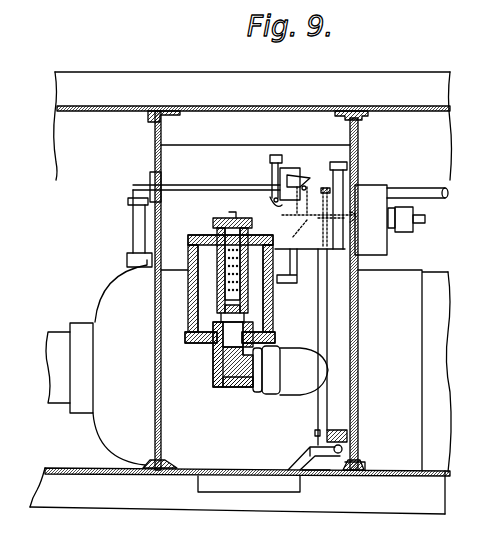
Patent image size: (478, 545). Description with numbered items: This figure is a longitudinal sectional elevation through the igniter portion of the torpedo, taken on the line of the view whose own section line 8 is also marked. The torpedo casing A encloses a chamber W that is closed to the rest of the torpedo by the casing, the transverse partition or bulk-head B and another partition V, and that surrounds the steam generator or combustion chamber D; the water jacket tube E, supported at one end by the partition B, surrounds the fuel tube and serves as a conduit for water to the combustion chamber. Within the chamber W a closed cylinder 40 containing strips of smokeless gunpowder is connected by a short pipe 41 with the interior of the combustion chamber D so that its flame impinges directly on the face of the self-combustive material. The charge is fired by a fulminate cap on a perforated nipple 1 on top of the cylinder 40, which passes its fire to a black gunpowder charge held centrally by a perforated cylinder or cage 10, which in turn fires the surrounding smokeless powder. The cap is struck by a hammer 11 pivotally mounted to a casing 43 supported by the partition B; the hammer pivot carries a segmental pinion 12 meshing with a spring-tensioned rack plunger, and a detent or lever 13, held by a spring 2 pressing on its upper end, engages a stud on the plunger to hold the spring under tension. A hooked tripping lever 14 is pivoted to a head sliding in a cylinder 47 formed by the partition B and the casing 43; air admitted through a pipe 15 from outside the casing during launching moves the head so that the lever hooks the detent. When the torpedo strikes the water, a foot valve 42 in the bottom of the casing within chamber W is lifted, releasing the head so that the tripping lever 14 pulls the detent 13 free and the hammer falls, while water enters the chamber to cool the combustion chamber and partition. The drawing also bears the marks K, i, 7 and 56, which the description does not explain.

The perforated nipple 1 is at (226, 218).
The spring 2 is at (306, 175).
The connecting rod 7 is at (319, 217).
The section line 8 is at (205, 62).
The perforated cylinder or cage 10 is at (217, 281).
The hammer 11 is at (270, 160).
The segmental pinion 12 is at (272, 206).
The detent or lever 13 is at (295, 200).
The tripping lever 14 is at (307, 233).
The pipe 15 is at (420, 223).
The closed cylinder 40 is at (188, 290).
The short pipe 41 is at (243, 387).
The foot valve 42 is at (270, 486).
The casing 43 is at (308, 249).
The cylinder 47 is at (401, 220).
The vertical bar 56 is at (318, 321).
The torpedo casing A is at (241, 293).
The transverse partition or bulk-head B is at (358, 163).
The steam generator or combustion chamber D is at (184, 444).
The water jacket tube E is at (404, 371).
The bracket K is at (134, 233).
The partition V is at (155, 161).
The chamber W is at (255, 158).
The tank body i is at (96, 362).